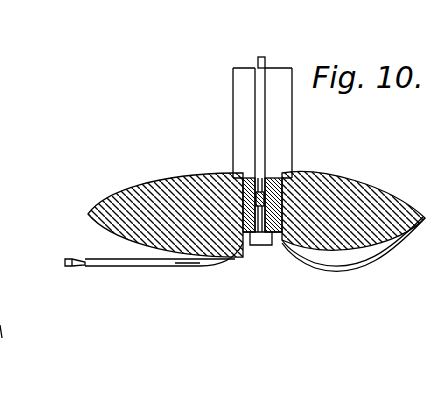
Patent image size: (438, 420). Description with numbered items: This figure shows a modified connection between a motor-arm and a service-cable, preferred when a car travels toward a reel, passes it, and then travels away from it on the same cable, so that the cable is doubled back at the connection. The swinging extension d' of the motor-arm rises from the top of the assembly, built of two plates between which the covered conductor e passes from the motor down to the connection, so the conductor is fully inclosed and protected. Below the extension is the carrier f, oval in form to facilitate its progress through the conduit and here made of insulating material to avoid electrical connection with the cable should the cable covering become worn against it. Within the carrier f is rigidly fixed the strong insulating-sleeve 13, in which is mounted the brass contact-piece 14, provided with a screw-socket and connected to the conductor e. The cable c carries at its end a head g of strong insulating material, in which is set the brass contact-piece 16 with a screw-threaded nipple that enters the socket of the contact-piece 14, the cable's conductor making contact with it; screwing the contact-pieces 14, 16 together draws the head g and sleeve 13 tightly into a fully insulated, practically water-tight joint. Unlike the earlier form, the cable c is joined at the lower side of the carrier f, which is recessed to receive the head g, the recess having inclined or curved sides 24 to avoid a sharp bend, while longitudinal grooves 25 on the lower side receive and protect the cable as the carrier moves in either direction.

The carrier f is at (392, 190).
The extension d' is at (275, 123).
The covered conductor e is at (266, 66).
The insulating-sleeve 13 is at (279, 176).
The brass contact-piece 14 is at (252, 176).
The brass contact-piece 16 is at (276, 240).
The head g is at (258, 246).
The cable c is at (92, 262).
The inclined or curved sides 24 is at (225, 260).
The longitudinal grooves 25 is at (180, 268).